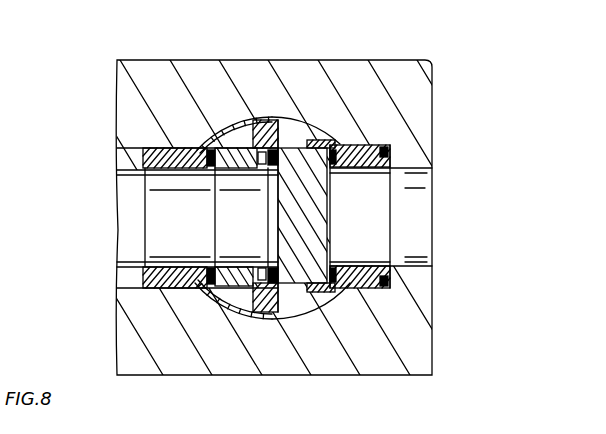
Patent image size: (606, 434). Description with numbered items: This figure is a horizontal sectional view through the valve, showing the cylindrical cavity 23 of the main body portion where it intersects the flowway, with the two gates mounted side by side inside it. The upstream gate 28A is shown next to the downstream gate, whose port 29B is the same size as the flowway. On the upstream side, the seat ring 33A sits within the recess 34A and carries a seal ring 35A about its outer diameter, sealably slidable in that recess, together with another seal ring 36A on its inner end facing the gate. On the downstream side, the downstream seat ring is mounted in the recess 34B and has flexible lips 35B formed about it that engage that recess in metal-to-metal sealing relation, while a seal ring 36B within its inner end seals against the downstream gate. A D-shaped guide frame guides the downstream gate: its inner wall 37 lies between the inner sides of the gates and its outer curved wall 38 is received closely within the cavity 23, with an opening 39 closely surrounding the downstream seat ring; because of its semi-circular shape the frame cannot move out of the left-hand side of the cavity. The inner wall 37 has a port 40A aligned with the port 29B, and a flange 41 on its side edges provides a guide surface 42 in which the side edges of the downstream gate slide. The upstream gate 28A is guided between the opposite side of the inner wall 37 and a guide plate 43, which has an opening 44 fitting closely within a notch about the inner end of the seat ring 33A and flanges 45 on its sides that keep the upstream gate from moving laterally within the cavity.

The cavity 23 is at (290, 309).
The upstream gate 28A is at (331, 218).
The port 29B is at (233, 262).
The seat ring 33A is at (366, 144).
The recess 34A is at (336, 267).
The recess 34B is at (172, 169).
The seal ring 35A is at (382, 288).
The flexible lips 35B is at (143, 286).
The seal ring 36A is at (320, 172).
The seal ring 36B is at (200, 290).
The inner wall 37 is at (286, 148).
The outer curved wall 38 is at (236, 286).
The opening 39 is at (203, 170).
The port 40A is at (292, 311).
The flange 41 is at (235, 117).
The guide surface 42 is at (244, 172).
The guide plate 43 is at (321, 140).
The opening 44 is at (331, 276).
The flanges 45 is at (368, 143).